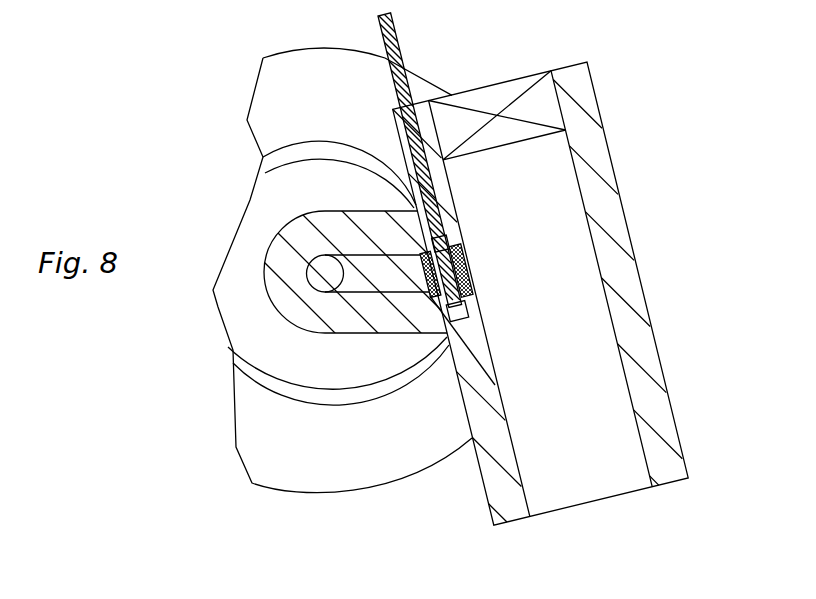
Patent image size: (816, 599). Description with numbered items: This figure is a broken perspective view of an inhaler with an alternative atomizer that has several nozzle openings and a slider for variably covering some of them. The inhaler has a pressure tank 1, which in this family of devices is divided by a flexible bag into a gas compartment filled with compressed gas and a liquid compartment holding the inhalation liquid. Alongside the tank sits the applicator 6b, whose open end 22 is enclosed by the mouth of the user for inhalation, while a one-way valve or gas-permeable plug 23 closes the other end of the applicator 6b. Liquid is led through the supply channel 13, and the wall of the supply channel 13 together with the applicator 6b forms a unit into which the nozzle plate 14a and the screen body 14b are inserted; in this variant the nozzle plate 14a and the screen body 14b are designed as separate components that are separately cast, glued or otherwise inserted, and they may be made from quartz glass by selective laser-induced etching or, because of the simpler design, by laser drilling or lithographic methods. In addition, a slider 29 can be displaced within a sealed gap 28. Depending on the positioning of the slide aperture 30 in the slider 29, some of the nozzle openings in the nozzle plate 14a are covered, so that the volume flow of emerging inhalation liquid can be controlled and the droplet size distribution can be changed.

The pressure tank 1 is at (388, 270).
The supply channel 13 is at (325, 272).
The nozzle plate 14a is at (463, 260).
The screen body 14b is at (424, 276).
The open end 22 is at (598, 501).
The one-way valve or gas-permeable plug 23 is at (495, 98).
The sealed gap 28 is at (462, 317).
The slider 29 is at (398, 50).
The slide aperture 30 is at (445, 247).
The applicator 6b is at (557, 334).